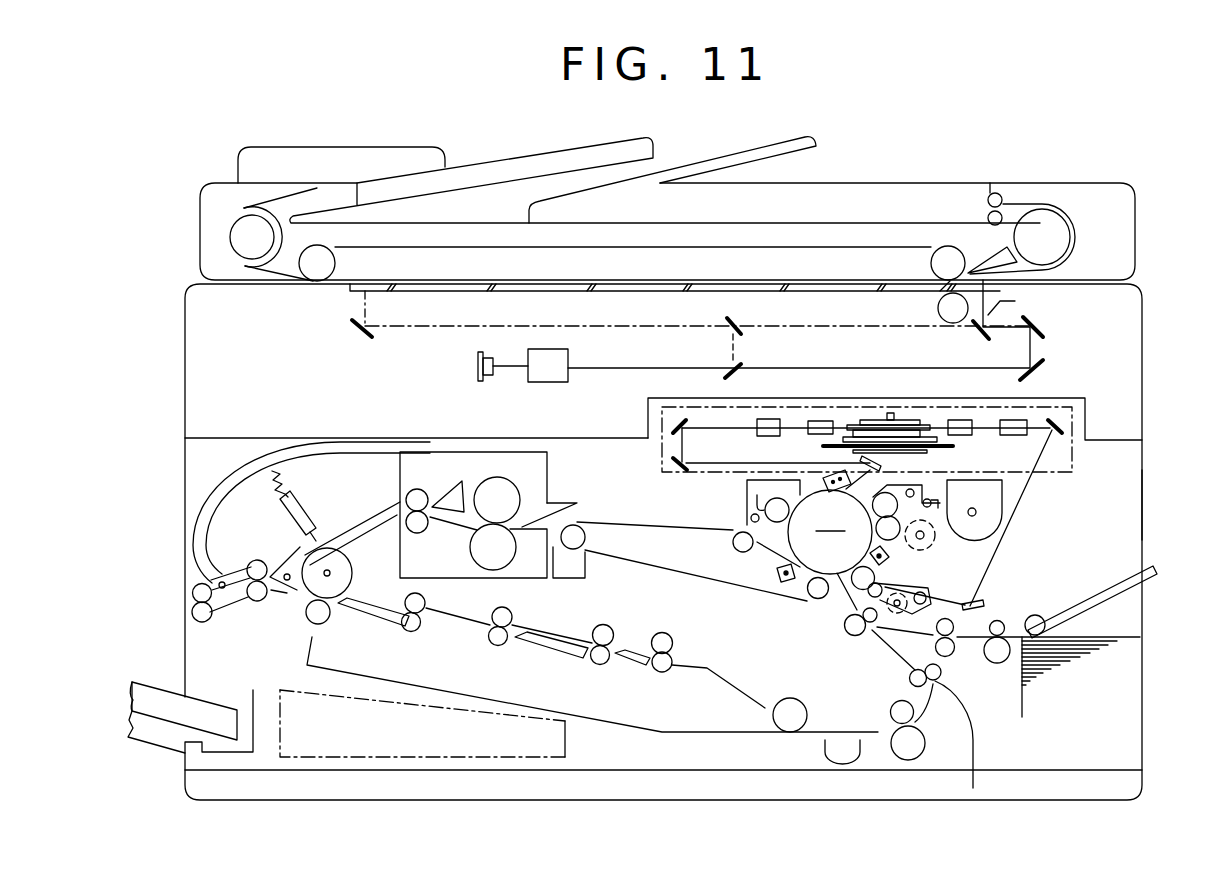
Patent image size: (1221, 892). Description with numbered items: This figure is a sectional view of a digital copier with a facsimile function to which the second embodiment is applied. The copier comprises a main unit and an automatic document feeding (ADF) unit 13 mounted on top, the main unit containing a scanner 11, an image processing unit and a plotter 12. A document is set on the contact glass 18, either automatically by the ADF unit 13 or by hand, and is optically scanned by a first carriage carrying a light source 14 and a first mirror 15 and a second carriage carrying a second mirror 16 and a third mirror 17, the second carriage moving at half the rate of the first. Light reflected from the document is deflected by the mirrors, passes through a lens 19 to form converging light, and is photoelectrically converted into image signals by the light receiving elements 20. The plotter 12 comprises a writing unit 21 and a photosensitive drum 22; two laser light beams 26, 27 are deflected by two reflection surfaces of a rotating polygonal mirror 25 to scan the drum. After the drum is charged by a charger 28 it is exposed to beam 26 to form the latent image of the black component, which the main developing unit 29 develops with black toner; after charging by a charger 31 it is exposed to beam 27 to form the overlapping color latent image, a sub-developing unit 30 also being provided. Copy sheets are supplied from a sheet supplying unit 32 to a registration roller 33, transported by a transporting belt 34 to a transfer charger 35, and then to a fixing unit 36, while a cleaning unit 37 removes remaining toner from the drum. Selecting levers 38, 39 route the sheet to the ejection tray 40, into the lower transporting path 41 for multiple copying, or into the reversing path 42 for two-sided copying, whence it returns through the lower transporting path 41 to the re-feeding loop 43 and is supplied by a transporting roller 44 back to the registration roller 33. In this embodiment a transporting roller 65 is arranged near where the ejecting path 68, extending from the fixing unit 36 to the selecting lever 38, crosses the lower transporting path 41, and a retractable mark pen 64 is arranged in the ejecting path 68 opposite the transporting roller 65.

The scanner 11 is at (1144, 339).
The plotter 12 is at (1144, 504).
The automatic document feeding (ADF) unit 13 is at (1136, 200).
The light source 14 is at (938, 308).
The first mirror 15 is at (977, 336).
The second mirror 16 is at (1041, 323).
The third mirror 17 is at (1045, 373).
The contact glass 18 is at (622, 291).
The lens 19 is at (568, 352).
The light receiving elements 20 is at (480, 363).
The writing unit 21 is at (1076, 468).
The photosensitive drum 22 is at (830, 532).
The polygonal mirror 25 is at (877, 418).
The laser light beam 26 is at (800, 420).
The laser light beam 27 is at (987, 420).
The charger 28 is at (826, 478).
The main developing unit 29 is at (990, 513).
The sub-developing unit 30 is at (974, 529).
The charger 31 is at (897, 555).
The sheet supplying unit 32 is at (1010, 675).
The registration roller 33 is at (852, 636).
The transporting belt 34 is at (718, 580).
The transfer charger 35 is at (786, 585).
The fixing unit 36 is at (517, 579).
The cleaning unit 37 is at (746, 501).
The selecting lever 38 is at (283, 568).
The selecting lever 39 is at (206, 583).
The ejection tray 40 is at (163, 690).
The lower transporting path 41 is at (284, 600).
The reversing path 42 is at (200, 483).
The re-feeding loop 43 is at (660, 733).
The transporting roller 44 is at (790, 698).
The retractable mark pen 64 is at (303, 516).
The transporting roller 65 is at (352, 573).
The ejecting path 68 is at (383, 503).